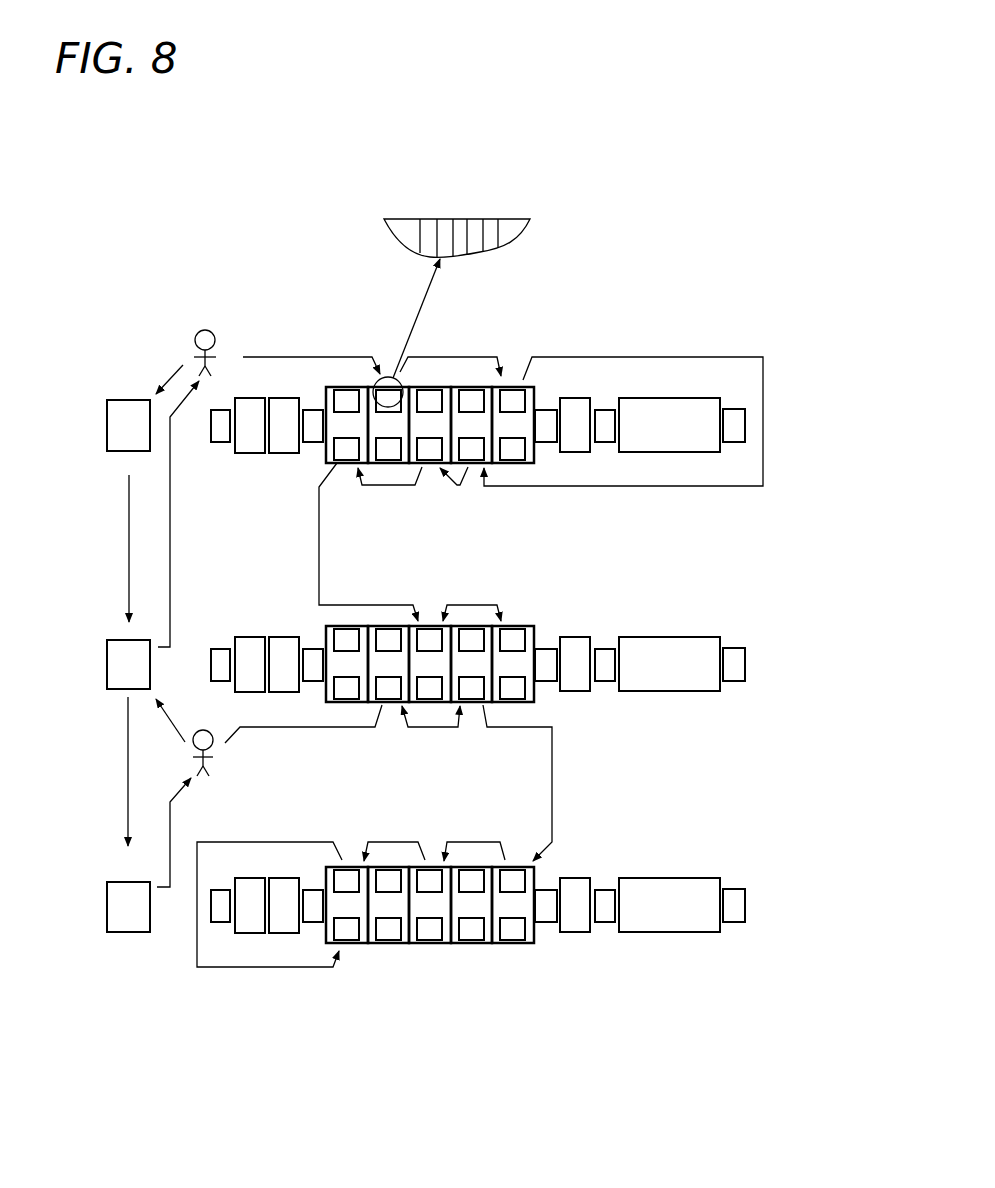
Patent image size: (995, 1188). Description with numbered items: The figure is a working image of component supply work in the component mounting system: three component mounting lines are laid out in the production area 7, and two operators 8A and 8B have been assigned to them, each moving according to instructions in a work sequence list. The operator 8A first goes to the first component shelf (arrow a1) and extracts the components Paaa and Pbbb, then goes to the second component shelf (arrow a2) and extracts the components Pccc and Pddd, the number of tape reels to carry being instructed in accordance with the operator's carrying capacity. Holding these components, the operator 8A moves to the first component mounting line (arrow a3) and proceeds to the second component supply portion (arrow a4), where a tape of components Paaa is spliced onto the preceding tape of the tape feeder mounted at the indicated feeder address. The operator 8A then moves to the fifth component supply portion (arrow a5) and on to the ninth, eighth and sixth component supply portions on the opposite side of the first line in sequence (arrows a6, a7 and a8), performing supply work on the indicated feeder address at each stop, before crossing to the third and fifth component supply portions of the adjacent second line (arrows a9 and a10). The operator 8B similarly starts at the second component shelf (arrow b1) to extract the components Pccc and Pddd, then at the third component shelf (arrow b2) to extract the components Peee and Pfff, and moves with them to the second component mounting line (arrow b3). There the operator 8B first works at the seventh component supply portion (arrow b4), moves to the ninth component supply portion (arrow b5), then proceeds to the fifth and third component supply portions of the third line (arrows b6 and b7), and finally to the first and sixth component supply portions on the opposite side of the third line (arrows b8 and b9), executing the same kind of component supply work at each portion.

The production area 7 is at (353, 188).
The operator 8A is at (208, 330).
The operator 8B is at (203, 730).
The arrow a1 is at (173, 375).
The arrow a2 is at (128, 540).
The arrow a3 is at (170, 525).
The arrow a4 is at (290, 357).
The arrow a5 is at (447, 357).
The arrow a6 is at (625, 357).
The arrow a7 is at (462, 486).
The arrow a8 is at (388, 487).
The arrow a9 is at (318, 548).
The arrow a10 is at (458, 605).
The arrow b1 is at (172, 722).
The arrow b2 is at (127, 752).
The arrow b3 is at (177, 793).
The arrow b4 is at (288, 727).
The arrow b5 is at (428, 727).
The arrow b6 is at (552, 778).
The arrow b7 is at (480, 842).
The arrow b8 is at (388, 842).
The arrow b9 is at (257, 967).